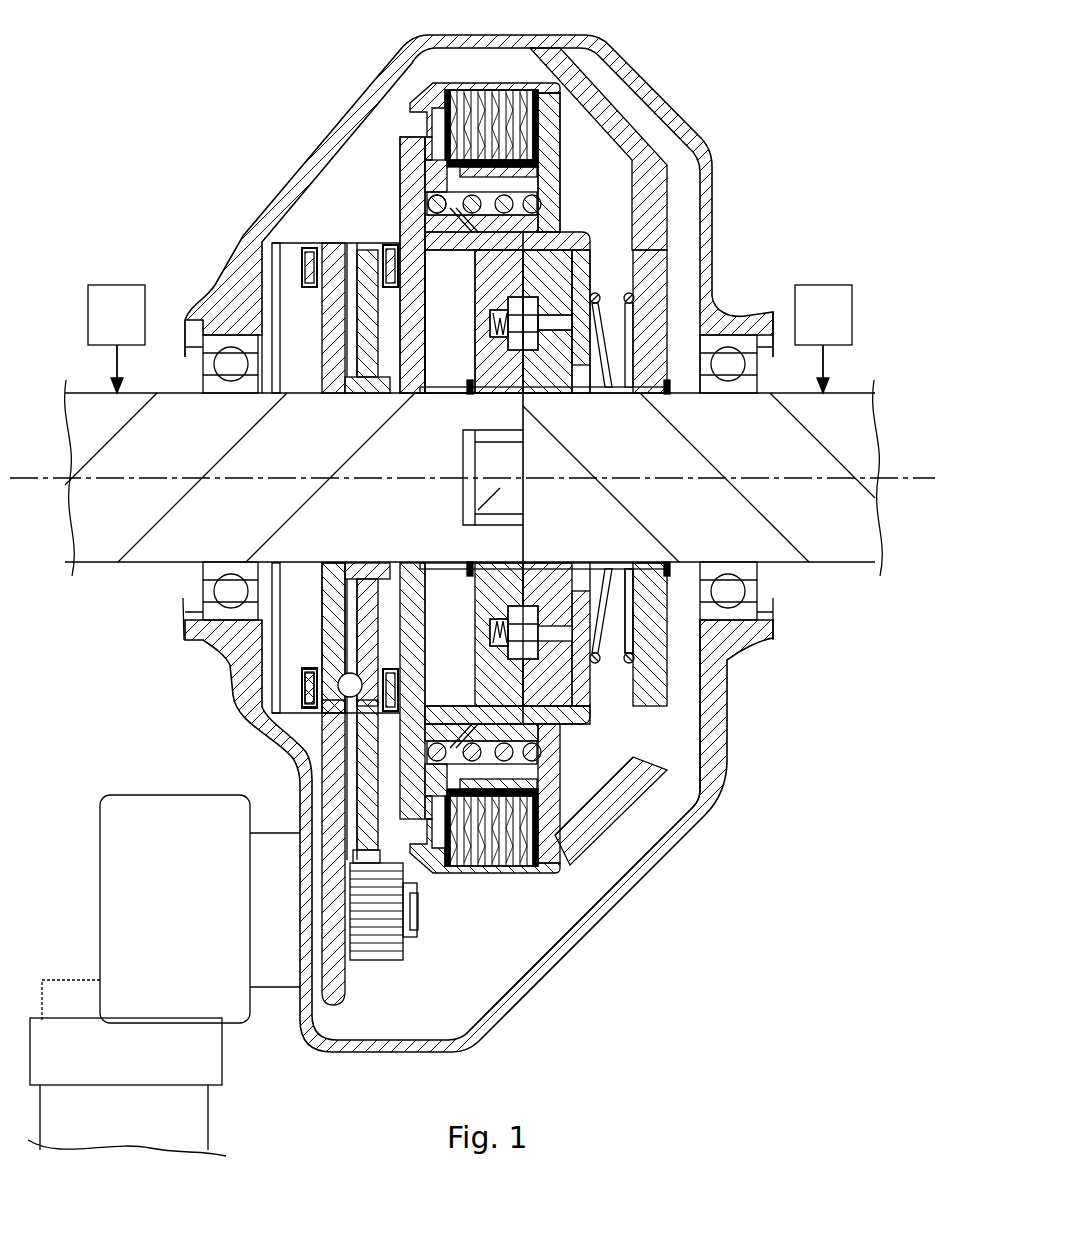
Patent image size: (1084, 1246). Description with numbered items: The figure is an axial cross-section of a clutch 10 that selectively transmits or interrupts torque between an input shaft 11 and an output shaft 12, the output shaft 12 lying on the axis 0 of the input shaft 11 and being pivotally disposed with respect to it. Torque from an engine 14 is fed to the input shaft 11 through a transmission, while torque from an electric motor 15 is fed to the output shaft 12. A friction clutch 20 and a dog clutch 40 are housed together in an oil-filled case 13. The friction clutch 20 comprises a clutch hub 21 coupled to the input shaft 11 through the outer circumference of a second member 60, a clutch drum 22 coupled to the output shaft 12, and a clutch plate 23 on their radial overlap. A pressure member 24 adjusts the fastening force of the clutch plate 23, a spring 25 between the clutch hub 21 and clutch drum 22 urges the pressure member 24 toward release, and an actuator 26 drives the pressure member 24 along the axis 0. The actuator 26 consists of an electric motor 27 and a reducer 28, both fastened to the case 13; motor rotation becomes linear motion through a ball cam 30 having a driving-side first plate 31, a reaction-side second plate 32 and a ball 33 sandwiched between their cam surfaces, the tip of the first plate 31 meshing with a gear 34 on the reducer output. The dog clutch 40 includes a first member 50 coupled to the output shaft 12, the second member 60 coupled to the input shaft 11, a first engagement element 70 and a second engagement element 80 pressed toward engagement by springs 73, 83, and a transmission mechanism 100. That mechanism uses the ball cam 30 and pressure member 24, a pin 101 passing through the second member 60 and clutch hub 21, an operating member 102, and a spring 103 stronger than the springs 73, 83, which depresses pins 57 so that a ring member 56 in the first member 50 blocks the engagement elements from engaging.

The axis 0 is at (28, 442).
The clutch 10 is at (748, 76).
The input shaft 11 is at (104, 556).
The output shaft 12 is at (846, 562).
The case 13 is at (598, 926).
The engine 14 is at (117, 292).
The electric motor 15 is at (823, 292).
The friction clutch 20 is at (479, 199).
The clutch hub 21 is at (548, 217).
The clutch drum 22 is at (610, 148).
The clutch plate 23 is at (494, 92).
The pressure member 24 is at (414, 155).
The spring 25 is at (432, 200).
The actuator 26 is at (157, 975).
The electric motor 27 is at (194, 1122).
The reducer 28 is at (116, 938).
The ball cam 30 is at (262, 713).
The first plate 31 is at (370, 822).
The second plate 32 is at (334, 790).
The ball 33 is at (344, 692).
The gear 34 is at (384, 956).
The dog clutch 40 is at (548, 542).
The first member 50 is at (556, 380).
The ring member 56 is at (526, 301).
The pins 57 is at (560, 301).
The second member 60 is at (500, 384).
The first engagement element 70 is at (492, 298).
The spring 73 is at (491, 325).
The second engagement element 80 is at (516, 660).
The spring 83 is at (491, 634).
The transmission mechanism 100 is at (599, 776).
The pin 101 is at (447, 706).
The operating member 102 is at (596, 714).
The spring 103 is at (600, 660).